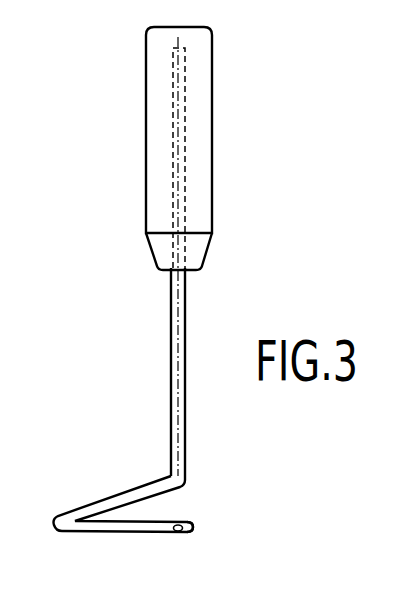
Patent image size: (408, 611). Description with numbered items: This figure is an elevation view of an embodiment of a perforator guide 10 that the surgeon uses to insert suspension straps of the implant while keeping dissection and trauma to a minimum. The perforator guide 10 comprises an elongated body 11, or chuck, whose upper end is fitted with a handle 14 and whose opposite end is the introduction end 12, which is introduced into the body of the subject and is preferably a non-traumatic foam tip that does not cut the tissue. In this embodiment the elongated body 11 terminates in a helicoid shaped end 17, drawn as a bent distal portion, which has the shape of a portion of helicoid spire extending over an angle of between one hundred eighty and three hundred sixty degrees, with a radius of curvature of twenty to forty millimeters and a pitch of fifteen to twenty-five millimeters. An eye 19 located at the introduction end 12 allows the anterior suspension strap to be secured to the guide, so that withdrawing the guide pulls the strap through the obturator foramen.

The perforator guide 10 is at (272, 195).
The elongated body 11 is at (186, 360).
The introduction end 12 is at (192, 531).
The handle 14 is at (203, 90).
The helicoid shaped end 17 is at (213, 478).
The eye 19 is at (176, 533).